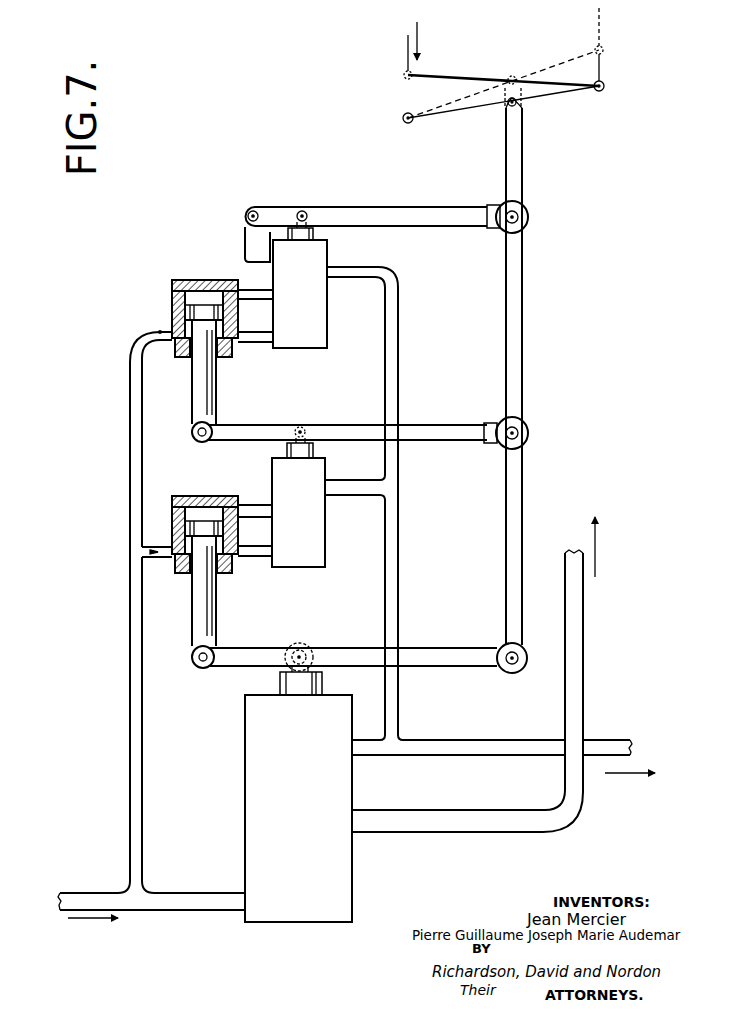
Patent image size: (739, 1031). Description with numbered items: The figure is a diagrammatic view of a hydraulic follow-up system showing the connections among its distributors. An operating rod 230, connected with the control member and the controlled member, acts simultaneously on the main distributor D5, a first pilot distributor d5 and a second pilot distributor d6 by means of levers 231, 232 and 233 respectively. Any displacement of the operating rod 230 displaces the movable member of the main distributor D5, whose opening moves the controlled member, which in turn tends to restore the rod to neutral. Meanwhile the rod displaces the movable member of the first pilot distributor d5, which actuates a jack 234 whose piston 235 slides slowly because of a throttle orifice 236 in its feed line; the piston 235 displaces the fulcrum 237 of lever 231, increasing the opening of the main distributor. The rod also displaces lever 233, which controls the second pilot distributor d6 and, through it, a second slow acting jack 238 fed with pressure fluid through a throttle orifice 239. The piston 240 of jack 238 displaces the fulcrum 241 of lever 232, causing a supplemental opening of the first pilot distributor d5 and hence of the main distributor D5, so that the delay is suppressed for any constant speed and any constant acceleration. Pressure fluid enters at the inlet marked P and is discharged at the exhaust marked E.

The operating rod 230 is at (524, 330).
The lever 231 is at (440, 653).
The lever 232 is at (447, 422).
The lever 233 is at (388, 212).
The jack 234 is at (190, 495).
The piston 235 is at (210, 615).
The throttle orifice 236 is at (145, 552).
The fulcrum 237 is at (198, 668).
The second slow acting jack 238 is at (199, 278).
The throttle orifice 239 is at (160, 332).
The piston 240 is at (210, 397).
The fulcrum 241 is at (192, 430).
The first pilot distributor d5 is at (320, 530).
The second pilot distributor d6 is at (320, 315).
The main distributor D5 is at (253, 770).
The pressure inlet P is at (138, 625).
The exhaust outlet E is at (504, 559).